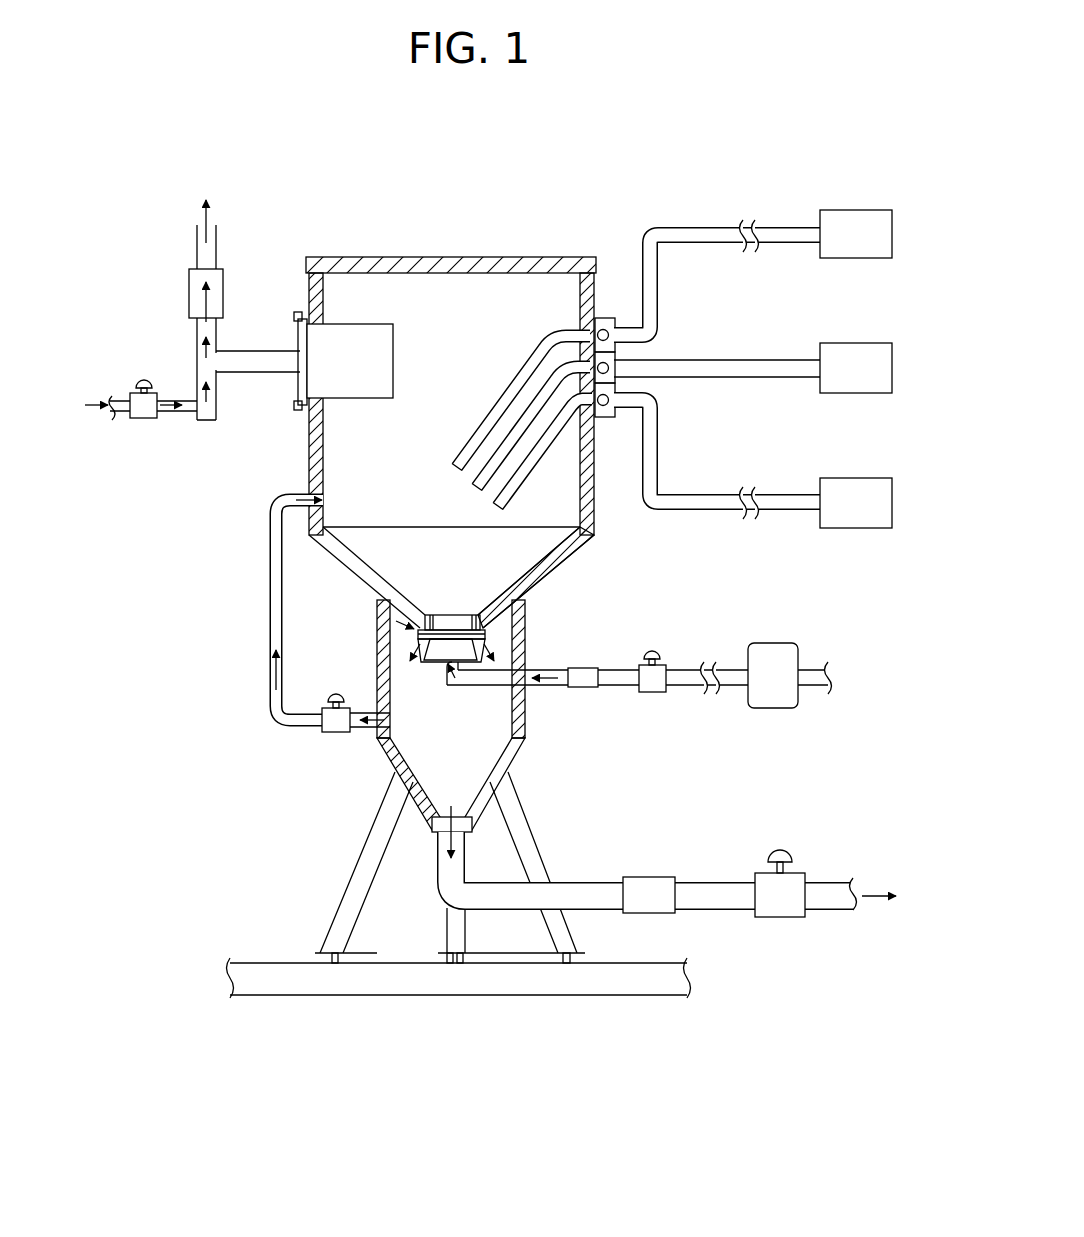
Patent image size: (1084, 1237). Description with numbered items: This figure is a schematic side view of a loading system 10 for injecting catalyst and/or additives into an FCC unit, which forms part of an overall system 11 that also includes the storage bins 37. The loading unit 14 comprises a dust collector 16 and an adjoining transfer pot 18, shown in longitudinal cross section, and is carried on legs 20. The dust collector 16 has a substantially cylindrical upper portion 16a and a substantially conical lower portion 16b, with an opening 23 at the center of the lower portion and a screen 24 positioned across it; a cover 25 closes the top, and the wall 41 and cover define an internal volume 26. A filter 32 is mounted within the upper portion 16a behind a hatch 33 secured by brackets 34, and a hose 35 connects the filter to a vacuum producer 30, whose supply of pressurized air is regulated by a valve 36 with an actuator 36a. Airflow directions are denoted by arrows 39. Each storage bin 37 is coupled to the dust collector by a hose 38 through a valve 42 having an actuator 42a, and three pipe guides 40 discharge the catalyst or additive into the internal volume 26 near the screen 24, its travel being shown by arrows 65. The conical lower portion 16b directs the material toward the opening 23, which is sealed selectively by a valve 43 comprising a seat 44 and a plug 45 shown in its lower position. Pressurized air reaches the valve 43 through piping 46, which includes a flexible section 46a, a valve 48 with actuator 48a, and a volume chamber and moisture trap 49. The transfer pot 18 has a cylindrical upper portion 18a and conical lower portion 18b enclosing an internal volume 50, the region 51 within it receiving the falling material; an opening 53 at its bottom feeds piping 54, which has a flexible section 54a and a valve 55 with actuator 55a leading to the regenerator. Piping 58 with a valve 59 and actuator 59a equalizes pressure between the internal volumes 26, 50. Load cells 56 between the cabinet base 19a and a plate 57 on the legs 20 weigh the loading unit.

The loading system 10 is at (296, 184).
The system for storing and loading catalyst and/or additives 11 is at (716, 153).
The loading unit 14 is at (478, 403).
The dust collector 16 is at (479, 577).
The upper portion 16a is at (602, 275).
The lower portion 16b is at (576, 572).
The transfer pot 18 is at (444, 717).
The upper portion 18a is at (526, 622).
The lower portion 18b is at (395, 772).
The base 19a is at (395, 996).
The legs 20 is at (447, 928).
The opening 23 is at (430, 616).
The screen 24 is at (338, 522).
The cover 25 is at (403, 256).
The internal volume 26 is at (449, 286).
The vacuum producer 30 is at (225, 290).
The filter 32 is at (397, 386).
The hatch 33 is at (298, 338).
The brackets 34 is at (297, 312).
The hose 35 is at (242, 373).
The valve 36 is at (140, 371).
The actuator 36a is at (144, 378).
The storage bins 37 is at (852, 210).
The hose 38 is at (668, 226).
The arrows 39 is at (198, 300).
The pipe guides 40 is at (540, 360).
The hopper wall 41 is at (588, 510).
The valve 42 is at (606, 326).
The actuator 42a is at (606, 326).
The valve 43 is at (396, 620).
The seat 44 is at (470, 614).
The plug 45 is at (438, 660).
The piping 46 is at (639, 692).
The flexible section 46a is at (590, 690).
The valve 48 is at (675, 667).
The actuator 48a is at (655, 650).
The volume chamber and moisture trap 49 is at (770, 643).
The internal volume 50 is at (410, 810).
The chamber interior 51 is at (522, 732).
The opening 53 is at (473, 822).
The piping 54 is at (555, 882).
The line coupling 54a is at (640, 877).
The valve 55 is at (803, 904).
The actuator 55a is at (785, 850).
The load cells 56 is at (330, 963).
The plate 57 is at (585, 952).
The piping 58 is at (268, 610).
The valve 59 is at (314, 710).
The actuator 59a is at (338, 695).
The arrows 65 is at (808, 232).